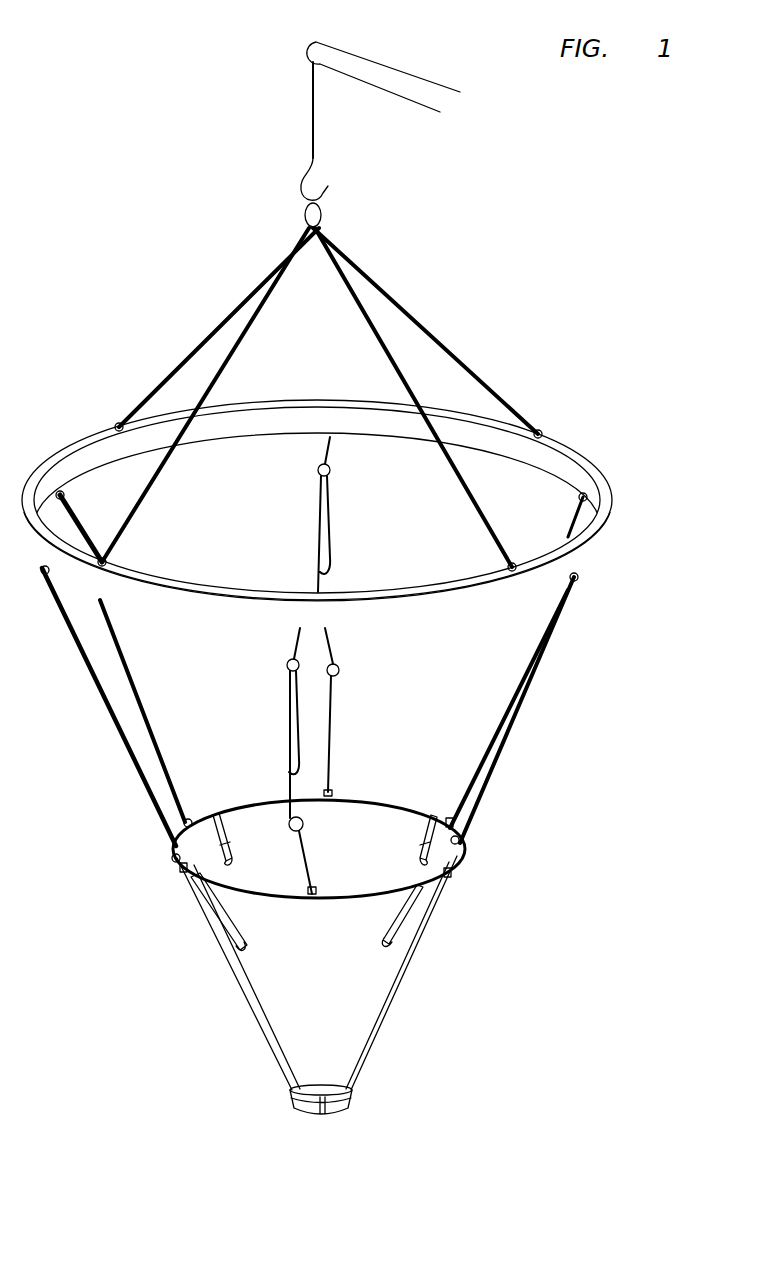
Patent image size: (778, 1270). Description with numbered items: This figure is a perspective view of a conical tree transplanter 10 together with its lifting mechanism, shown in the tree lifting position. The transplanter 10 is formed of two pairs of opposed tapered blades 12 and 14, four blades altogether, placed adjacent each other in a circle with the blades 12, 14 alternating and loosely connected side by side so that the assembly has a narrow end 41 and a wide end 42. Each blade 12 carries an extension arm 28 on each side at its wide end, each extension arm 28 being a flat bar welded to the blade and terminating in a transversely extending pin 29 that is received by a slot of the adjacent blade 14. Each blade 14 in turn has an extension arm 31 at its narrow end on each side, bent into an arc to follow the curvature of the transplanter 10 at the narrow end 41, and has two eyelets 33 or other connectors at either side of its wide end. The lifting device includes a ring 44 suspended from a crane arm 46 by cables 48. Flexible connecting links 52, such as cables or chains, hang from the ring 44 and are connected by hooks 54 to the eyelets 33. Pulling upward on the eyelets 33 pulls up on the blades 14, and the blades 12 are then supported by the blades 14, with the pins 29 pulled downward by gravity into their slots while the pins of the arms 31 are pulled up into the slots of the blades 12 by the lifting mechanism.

The tree transplanter 10 is at (425, 1018).
The tapered blade 12 is at (362, 815).
The tapered blade 14 is at (248, 1000).
The extension arm 28 is at (222, 922).
The pin 29 is at (230, 840).
The extension arm 31 is at (350, 1098).
The eyelet 33 is at (456, 818).
The narrow end 41 is at (250, 1072).
The wide end 42 is at (259, 774).
The ring 44 is at (585, 448).
The crane arm 46 is at (395, 88).
The cable 48 is at (258, 282).
The flexible connecting link 52 is at (125, 660).
The hook 54 is at (188, 822).